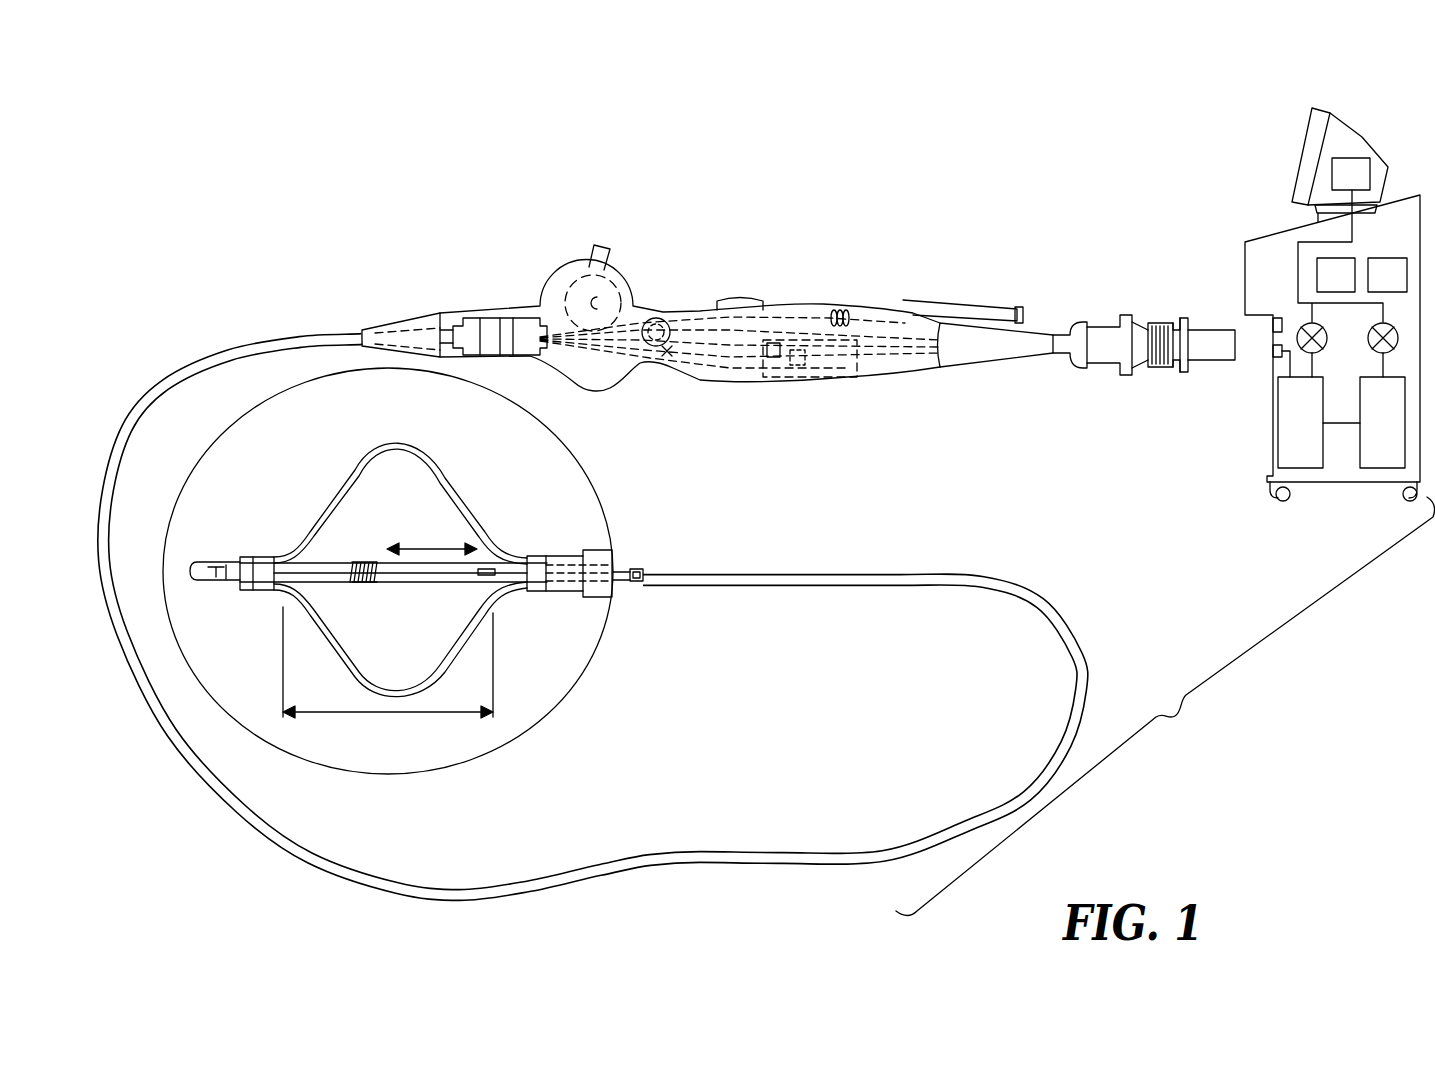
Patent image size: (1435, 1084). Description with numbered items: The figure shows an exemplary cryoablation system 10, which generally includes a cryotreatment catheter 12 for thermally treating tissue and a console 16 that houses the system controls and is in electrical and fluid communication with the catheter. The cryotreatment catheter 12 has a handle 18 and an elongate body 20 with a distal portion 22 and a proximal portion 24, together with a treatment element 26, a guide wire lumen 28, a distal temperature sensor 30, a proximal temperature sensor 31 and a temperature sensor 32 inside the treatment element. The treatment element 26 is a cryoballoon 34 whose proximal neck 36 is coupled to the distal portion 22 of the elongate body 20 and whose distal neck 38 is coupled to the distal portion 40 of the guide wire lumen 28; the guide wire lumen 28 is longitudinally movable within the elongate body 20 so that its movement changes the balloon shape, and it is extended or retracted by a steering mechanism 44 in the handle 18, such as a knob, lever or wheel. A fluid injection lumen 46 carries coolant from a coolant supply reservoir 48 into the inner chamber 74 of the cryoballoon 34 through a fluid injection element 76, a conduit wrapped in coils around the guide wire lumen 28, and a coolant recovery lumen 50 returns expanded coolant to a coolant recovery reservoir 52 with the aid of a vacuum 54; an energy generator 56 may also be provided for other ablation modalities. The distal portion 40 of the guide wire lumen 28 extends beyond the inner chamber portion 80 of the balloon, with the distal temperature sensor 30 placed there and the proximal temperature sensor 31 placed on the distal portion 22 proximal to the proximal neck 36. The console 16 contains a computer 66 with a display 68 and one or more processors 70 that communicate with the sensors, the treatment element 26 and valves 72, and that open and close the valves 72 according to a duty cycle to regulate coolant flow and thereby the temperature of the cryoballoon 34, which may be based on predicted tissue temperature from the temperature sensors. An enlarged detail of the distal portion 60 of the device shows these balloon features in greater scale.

The cryoablation system 10 is at (1165, 706).
The cryotreatment catheter 12 is at (468, 207).
The console 16 is at (1256, 216).
The handle 18 is at (885, 305).
The elongate body 20 is at (240, 813).
The distal portion of the elongate body 22 is at (728, 588).
The proximal portion of the elongate body 24 is at (247, 335).
The treatment element 26 is at (334, 452).
The guide wire lumen 28 is at (332, 576).
The distal temperature sensor 30 is at (218, 583).
The proximal temperature sensor 31 is at (641, 568).
The temperature sensor within the treatment element 32 is at (490, 566).
The cryoballoon 34 is at (405, 442).
The proximal neck 36 is at (540, 555).
The distal neck 38 is at (265, 593).
The distal portion of the guide wire lumen 40 is at (218, 560).
The steering mechanism 44 is at (737, 297).
The fluid injection lumen 46 is at (497, 593).
The coolant supply reservoir 48 is at (1369, 441).
The coolant recovery lumen 50 is at (578, 550).
The coolant recovery reservoir 52 is at (1286, 441).
The vacuum 54 is at (1373, 290).
The energy generator 56 is at (1322, 290).
The distal portion of the mapping catheter 60 is at (537, 733).
The computer 66 is at (1351, 127).
The display 68 is at (1303, 134).
The processor 70 is at (1337, 188).
The valve 72 is at (1369, 328).
The inner chamber 74 is at (376, 661).
The fluid injection element 76 is at (358, 562).
The inner chamber portion 80 is at (393, 716).